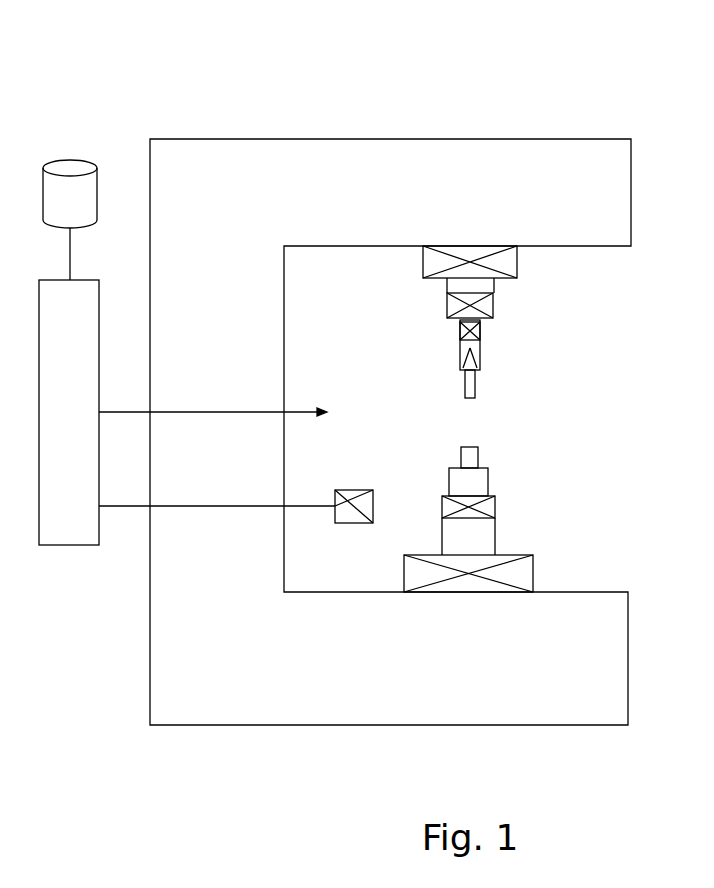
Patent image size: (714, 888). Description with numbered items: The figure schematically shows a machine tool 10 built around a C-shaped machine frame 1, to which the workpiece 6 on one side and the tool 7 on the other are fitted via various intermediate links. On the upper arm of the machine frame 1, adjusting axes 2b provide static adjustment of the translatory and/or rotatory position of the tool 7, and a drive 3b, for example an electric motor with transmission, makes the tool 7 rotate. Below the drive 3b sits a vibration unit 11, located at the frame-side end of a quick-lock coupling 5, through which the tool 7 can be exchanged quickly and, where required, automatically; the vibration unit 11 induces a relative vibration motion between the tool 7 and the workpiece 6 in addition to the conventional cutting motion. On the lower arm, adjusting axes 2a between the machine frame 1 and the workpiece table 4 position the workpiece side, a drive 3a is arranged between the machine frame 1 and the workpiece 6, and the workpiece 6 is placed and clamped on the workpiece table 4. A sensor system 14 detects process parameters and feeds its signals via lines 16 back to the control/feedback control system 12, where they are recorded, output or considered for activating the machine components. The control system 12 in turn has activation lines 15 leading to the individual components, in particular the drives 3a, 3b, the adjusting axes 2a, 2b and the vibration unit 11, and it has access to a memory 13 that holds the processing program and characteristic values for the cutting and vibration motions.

The machine frame 1 is at (294, 712).
The machine tool 10 is at (475, 78).
The adjusting axes 2a is at (533, 575).
The adjusting axes 2b is at (517, 262).
The drive 3a is at (495, 510).
The drive 3b is at (492, 310).
The workpiece table 4 is at (488, 482).
The quick-lock coupling 5 is at (479, 350).
The workpiece 6 is at (478, 458).
The tool 7 is at (474, 385).
The vibration unit 11 is at (462, 333).
The control/feedback control system 12 is at (70, 535).
The memory 13 is at (70, 165).
The sensor system 14 is at (352, 492).
The activation lines 15 is at (208, 410).
The lines 16 is at (217, 508).